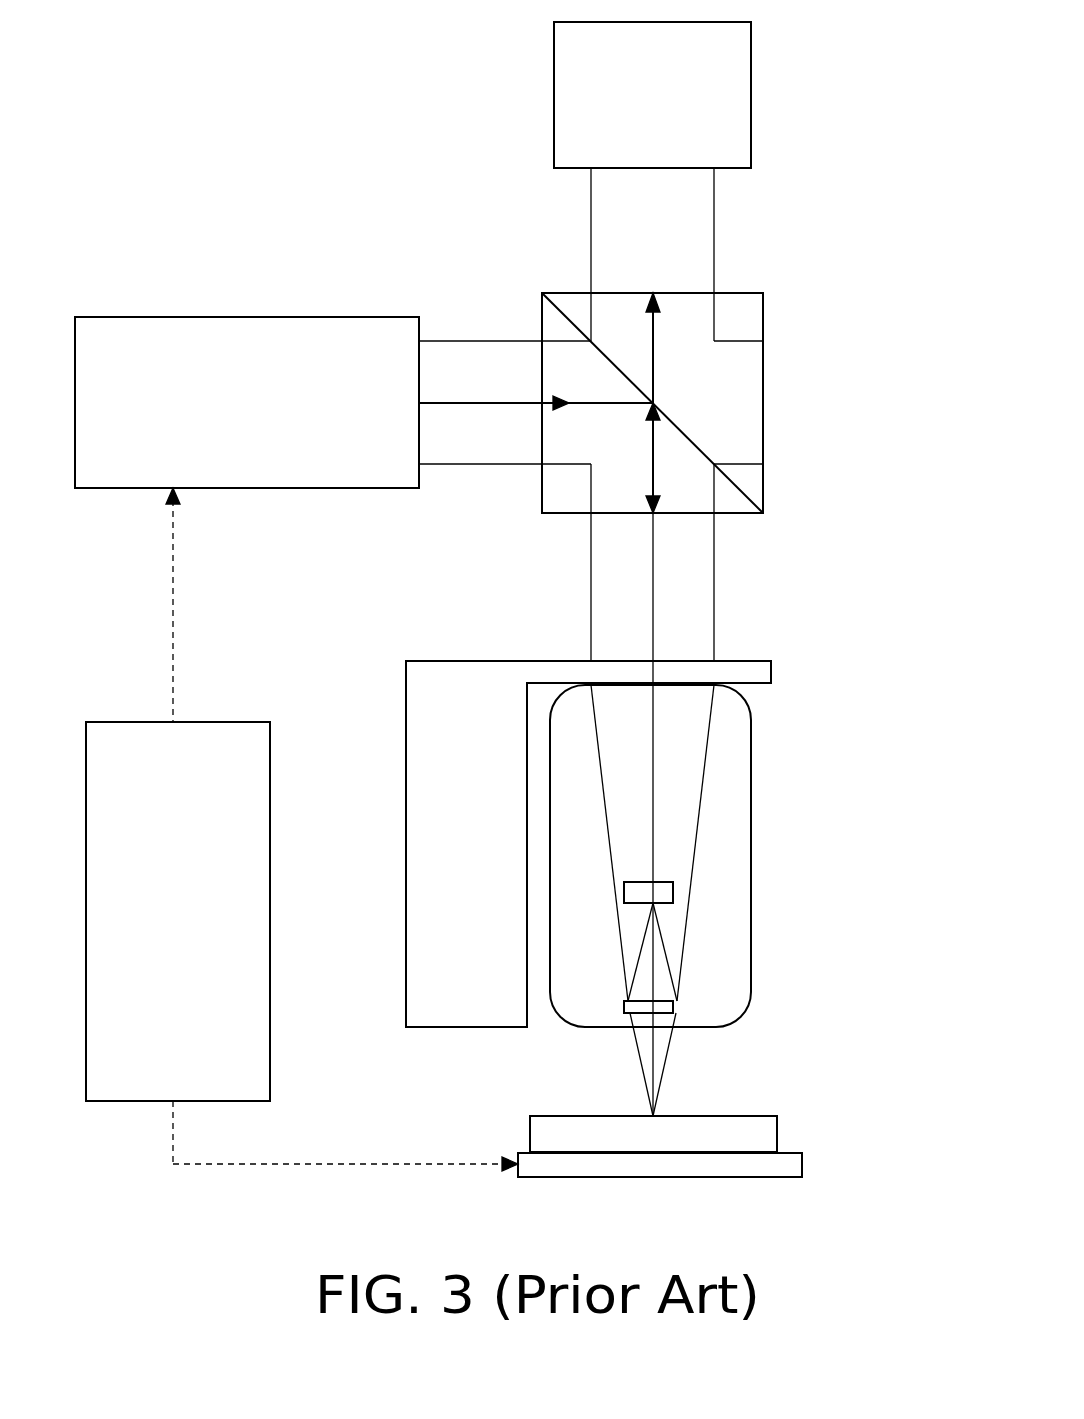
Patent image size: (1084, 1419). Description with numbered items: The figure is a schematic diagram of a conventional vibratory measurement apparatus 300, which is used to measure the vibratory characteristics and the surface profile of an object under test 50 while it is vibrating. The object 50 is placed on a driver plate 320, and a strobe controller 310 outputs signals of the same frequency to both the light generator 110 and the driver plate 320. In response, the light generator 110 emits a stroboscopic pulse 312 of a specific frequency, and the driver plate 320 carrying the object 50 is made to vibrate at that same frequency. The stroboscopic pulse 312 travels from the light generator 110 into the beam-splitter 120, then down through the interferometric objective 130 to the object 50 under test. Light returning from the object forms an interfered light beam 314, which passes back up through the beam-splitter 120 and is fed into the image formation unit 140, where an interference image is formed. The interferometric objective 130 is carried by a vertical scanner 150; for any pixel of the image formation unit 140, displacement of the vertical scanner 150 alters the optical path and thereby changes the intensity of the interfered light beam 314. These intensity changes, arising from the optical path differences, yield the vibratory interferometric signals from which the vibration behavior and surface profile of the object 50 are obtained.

The vibratory measurement apparatus 300 is at (190, 1293).
The light generator 110 is at (212, 317).
The stroboscopic pulse 312 is at (471, 403).
The beam-splitter 120 is at (763, 395).
The interfered light beam 314 is at (655, 318).
The image formation unit 140 is at (751, 91).
The vertical scanner 150 is at (406, 698).
The interferometric objective 130 is at (751, 840).
The object under test 50 is at (777, 1133).
The driver plate 320 is at (770, 1177).
The strobe controller 310 is at (270, 1057).